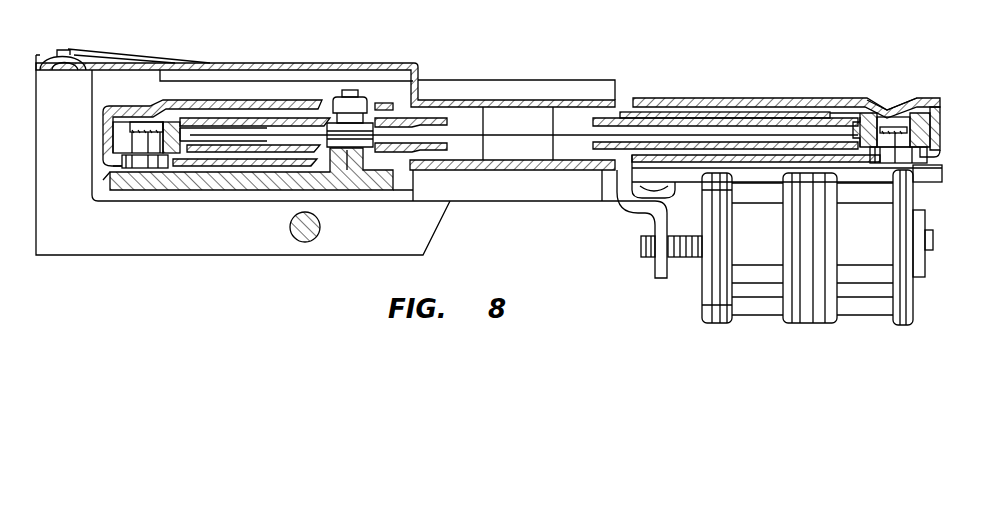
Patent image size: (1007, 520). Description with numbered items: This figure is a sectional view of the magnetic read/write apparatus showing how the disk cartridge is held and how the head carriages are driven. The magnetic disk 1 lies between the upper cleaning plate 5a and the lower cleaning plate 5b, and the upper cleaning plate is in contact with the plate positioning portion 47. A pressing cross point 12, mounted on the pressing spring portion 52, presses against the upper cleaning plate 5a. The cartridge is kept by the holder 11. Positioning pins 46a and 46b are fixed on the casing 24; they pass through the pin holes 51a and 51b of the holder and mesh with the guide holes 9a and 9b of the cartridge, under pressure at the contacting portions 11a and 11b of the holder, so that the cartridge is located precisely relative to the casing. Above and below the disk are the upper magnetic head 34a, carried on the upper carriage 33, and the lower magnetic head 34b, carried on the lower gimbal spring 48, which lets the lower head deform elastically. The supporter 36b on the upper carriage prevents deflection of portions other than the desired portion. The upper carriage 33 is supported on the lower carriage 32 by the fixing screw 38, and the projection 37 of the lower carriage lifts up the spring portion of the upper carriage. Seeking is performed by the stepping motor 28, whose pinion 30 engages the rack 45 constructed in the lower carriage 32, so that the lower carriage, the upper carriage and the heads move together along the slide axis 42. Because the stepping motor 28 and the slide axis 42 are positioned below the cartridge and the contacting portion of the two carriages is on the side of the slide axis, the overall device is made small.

The magnetic disk 1 is at (213, 137).
The upper cleaning plate 5a is at (388, 106).
The lower cleaning plate 5b is at (391, 121).
The guide hole 9a is at (870, 103).
The guide hole 9b is at (127, 110).
The holder 11 is at (668, 100).
The contacting portion 11a is at (890, 107).
The contacting portion 11b is at (140, 112).
The pressing cross point 12 is at (348, 88).
The casing 24 is at (223, 177).
The stepping motor 28 is at (763, 307).
The pinion 30 is at (692, 258).
The lower carriage 32 is at (372, 243).
The upper carriage 33 is at (300, 50).
The upper magnetic head 34a is at (505, 125).
The lower magnetic head 34b is at (528, 145).
The supporter 36b is at (610, 88).
The projection 37 is at (42, 55).
The fixing screw 38 is at (54, 54).
The slide axis 42 is at (300, 238).
The rack 45 is at (660, 277).
The positioning pin 46a is at (900, 160).
The positioning pin 46b is at (145, 168).
The plate positioning portion 47 is at (347, 150).
The lower gimbal spring 48 is at (587, 172).
The pin hole 51a is at (858, 147).
The pin hole 51b is at (117, 170).
The pressing spring portion 52 is at (363, 110).